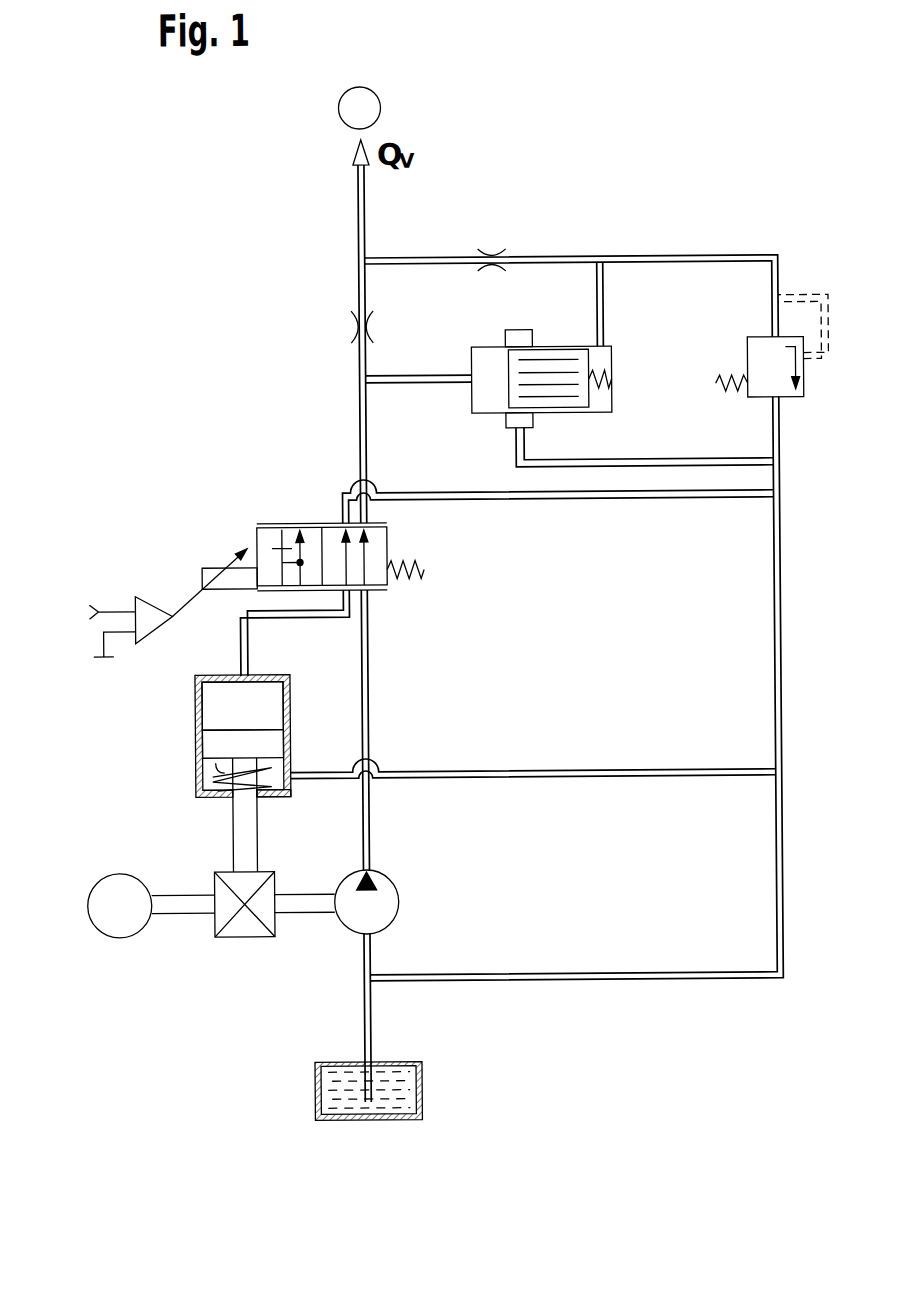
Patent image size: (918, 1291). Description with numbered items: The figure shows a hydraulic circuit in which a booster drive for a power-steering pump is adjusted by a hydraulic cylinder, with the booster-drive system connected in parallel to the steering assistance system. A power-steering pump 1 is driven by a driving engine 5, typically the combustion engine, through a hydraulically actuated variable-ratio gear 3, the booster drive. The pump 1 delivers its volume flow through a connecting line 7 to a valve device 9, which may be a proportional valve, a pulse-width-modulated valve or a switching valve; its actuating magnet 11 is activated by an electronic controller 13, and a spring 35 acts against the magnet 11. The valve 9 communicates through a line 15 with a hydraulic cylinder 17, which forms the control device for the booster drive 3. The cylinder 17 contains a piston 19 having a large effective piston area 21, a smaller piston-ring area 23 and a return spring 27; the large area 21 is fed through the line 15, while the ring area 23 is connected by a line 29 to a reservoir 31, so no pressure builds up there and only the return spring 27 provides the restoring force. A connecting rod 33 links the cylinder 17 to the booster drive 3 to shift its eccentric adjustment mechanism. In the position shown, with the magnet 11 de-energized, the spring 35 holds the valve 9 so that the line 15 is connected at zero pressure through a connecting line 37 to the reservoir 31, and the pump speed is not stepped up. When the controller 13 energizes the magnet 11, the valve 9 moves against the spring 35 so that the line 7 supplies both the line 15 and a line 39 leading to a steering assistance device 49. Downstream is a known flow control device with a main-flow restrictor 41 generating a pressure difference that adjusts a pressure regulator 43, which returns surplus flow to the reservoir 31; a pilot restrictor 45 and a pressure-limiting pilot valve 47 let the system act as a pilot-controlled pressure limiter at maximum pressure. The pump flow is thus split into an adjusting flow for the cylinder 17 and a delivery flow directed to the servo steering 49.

The power-steering pump 1 is at (394, 903).
The variable-ratio gear 3 is at (240, 936).
The driving engine 5 is at (83, 905).
The connecting line 7 is at (365, 667).
The valve device 9 is at (310, 537).
The actuating magnet 11 is at (208, 567).
The electronic controller 13 is at (148, 610).
The line 15 is at (238, 655).
The hydraulic cylinder 17 is at (199, 713).
The piston 19 is at (266, 745).
The large effective piston area 21 is at (256, 729).
The smaller piston-ring area 23 is at (199, 782).
The return spring 27 is at (268, 797).
The line 29 is at (656, 779).
The reservoir 31 is at (416, 1082).
The connecting rod 33 is at (242, 832).
The spring 35 is at (424, 570).
The connecting line 37 is at (655, 501).
The line 39 is at (365, 432).
The main-flow restrictor 41 is at (351, 327).
The pressure regulator 43 is at (558, 360).
The pilot restrictor 45 is at (492, 257).
The pressure-limiting pilot valve 47 is at (757, 357).
The steering assistance device 49 is at (359, 108).